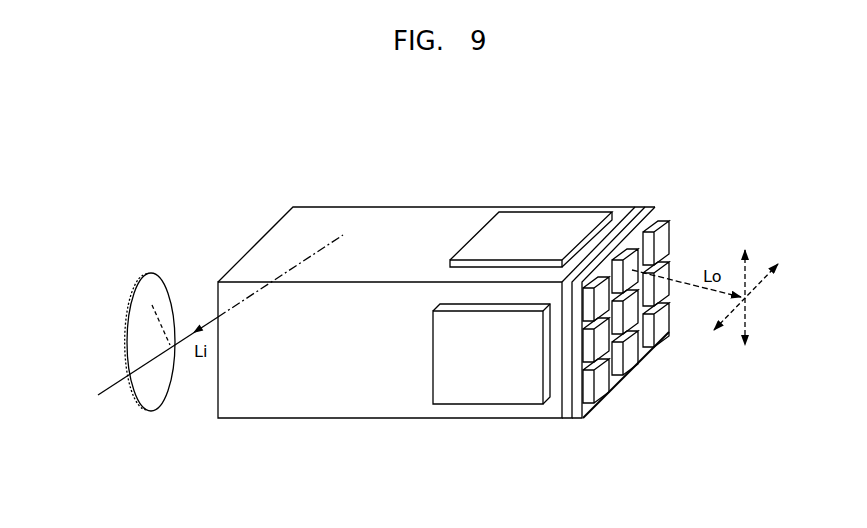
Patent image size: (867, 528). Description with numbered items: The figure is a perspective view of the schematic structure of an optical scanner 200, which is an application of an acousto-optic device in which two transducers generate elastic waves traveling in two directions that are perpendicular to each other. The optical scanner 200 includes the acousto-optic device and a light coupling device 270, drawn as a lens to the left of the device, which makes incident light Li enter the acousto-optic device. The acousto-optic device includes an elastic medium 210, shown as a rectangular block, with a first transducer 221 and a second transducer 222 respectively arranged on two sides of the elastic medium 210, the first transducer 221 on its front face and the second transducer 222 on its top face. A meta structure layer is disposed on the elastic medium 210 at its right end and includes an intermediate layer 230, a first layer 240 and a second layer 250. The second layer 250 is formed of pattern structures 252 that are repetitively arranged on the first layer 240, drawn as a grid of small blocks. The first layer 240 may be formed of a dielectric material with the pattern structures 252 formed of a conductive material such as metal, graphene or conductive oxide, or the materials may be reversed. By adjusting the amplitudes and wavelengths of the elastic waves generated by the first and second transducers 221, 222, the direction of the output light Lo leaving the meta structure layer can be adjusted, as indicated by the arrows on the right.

The optical scanner 200 is at (479, 286).
The elastic medium 210 is at (353, 405).
The first transducer 221 is at (480, 395).
The second transducer 222 is at (540, 218).
The intermediate layer 230 is at (565, 410).
The first layer 240 is at (583, 419).
The second layer 250 is at (644, 327).
The pattern structures 252 is at (600, 390).
The light coupling device 270 is at (155, 288).